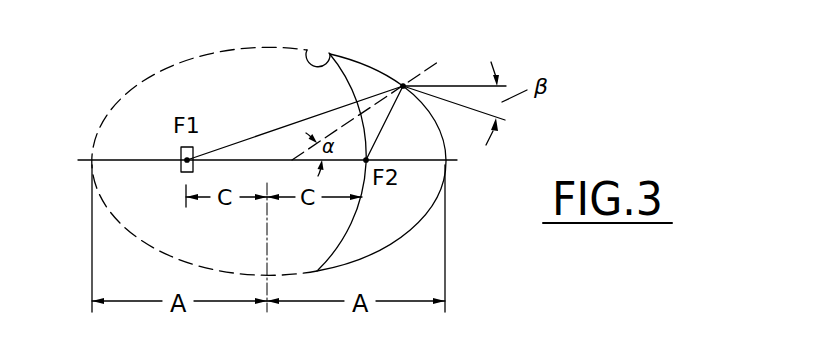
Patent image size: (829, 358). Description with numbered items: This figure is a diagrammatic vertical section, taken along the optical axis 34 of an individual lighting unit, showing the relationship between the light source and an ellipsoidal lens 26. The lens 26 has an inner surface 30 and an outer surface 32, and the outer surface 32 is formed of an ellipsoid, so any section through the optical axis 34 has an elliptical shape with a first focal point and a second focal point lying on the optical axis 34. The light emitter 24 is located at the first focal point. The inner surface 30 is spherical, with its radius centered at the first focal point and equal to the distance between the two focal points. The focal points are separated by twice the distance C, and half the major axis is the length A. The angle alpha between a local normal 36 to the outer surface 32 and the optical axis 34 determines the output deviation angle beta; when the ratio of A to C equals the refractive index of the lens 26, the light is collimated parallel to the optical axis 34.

The light emitter 24 is at (181, 172).
The lens 26 is at (352, 60).
The inner surface 30 is at (308, 52).
The outer surface 32 is at (389, 73).
The optical axis 34 is at (93, 170).
The local normal 36 is at (448, 56).